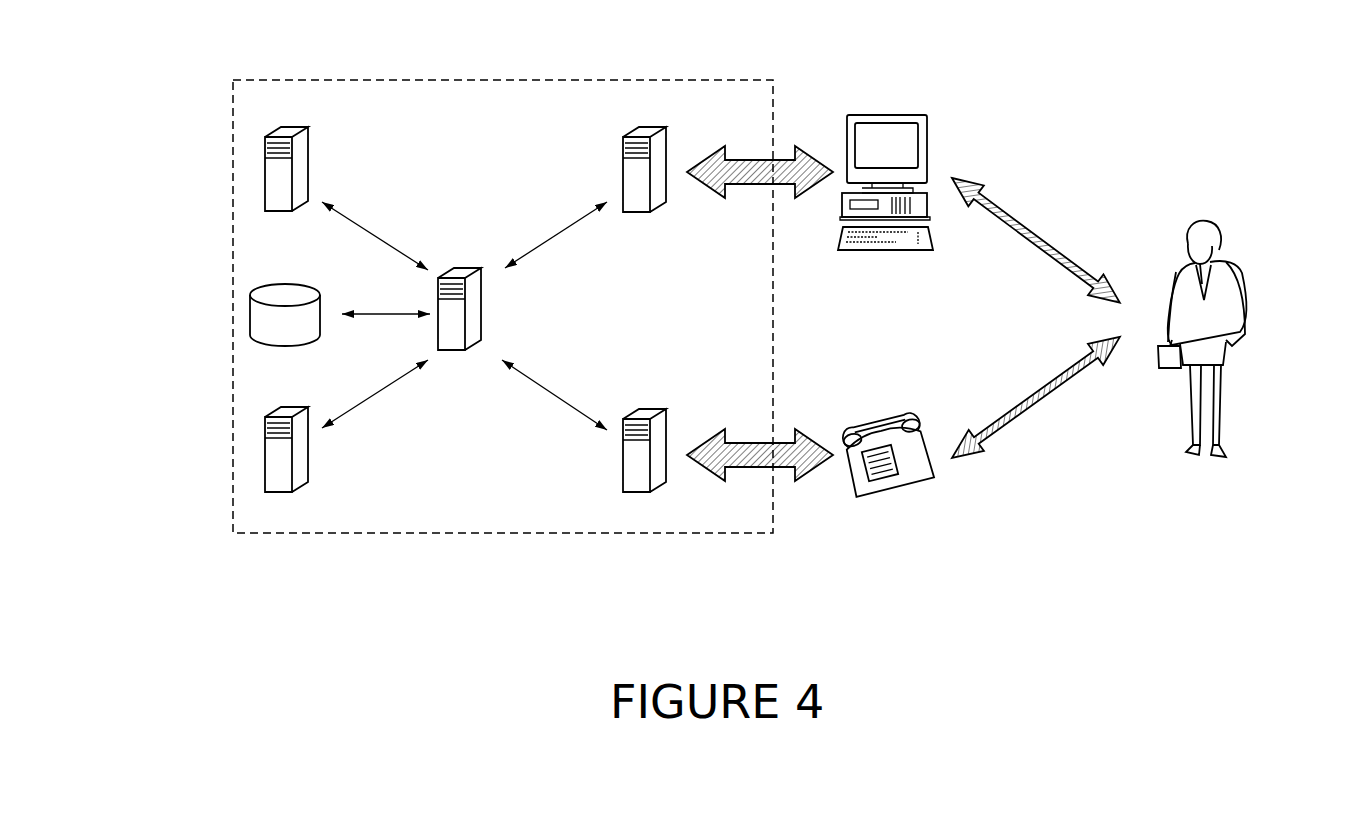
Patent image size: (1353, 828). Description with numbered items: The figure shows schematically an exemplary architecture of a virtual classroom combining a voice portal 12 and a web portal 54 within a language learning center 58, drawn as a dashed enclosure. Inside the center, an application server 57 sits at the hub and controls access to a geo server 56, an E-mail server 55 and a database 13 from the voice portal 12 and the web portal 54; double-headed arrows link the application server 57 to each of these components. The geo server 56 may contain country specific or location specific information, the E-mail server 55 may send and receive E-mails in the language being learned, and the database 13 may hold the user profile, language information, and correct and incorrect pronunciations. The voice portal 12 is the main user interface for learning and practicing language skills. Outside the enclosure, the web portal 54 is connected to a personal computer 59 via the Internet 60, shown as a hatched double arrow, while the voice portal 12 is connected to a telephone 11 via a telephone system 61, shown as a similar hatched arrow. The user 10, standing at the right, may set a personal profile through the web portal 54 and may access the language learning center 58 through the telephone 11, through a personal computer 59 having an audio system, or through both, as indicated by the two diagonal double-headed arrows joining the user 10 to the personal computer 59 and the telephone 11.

The user 10 is at (1245, 295).
The telephone 11 is at (905, 488).
The voice portal 12 is at (623, 458).
The database 13 is at (250, 313).
The web portal 54 is at (623, 160).
The E-mail server 55 is at (290, 128).
The geo server 56 is at (265, 468).
The application server 57 is at (482, 312).
The language learning center 58 is at (468, 535).
The personal computer 59 is at (930, 145).
The Internet 60 is at (746, 160).
The telephone system 61 is at (745, 466).